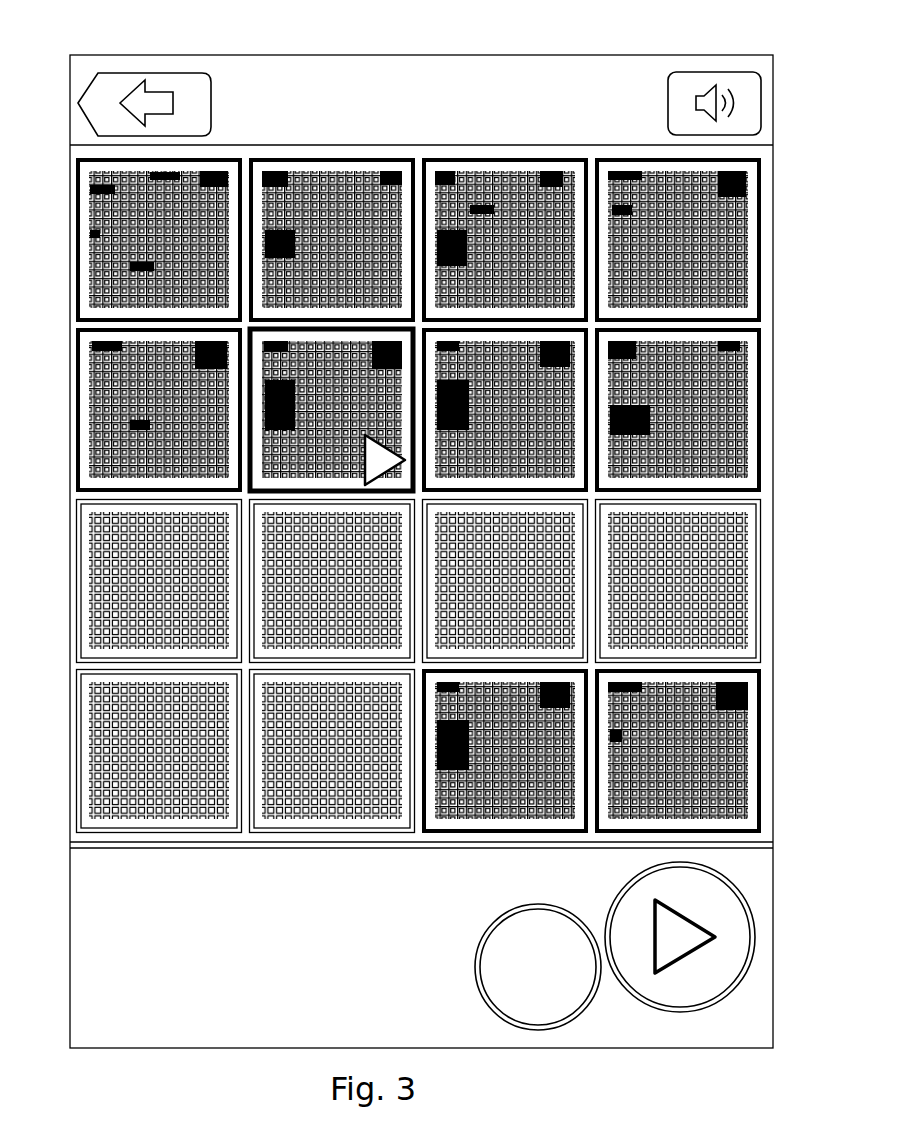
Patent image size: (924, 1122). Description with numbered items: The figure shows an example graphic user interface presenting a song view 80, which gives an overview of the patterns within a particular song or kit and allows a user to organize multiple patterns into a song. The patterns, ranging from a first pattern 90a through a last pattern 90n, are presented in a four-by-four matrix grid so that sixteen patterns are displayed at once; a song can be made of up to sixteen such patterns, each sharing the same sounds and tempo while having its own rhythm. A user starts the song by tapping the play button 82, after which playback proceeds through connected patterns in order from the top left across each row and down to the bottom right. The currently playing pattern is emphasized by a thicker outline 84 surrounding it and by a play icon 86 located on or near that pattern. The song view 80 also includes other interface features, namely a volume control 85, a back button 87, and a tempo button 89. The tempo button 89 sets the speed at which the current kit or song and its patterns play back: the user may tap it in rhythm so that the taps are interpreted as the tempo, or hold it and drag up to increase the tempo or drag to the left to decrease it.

The song view 80 is at (425, 38).
The play button 82 is at (680, 1010).
The thicker outline 84 is at (272, 492).
The volume control 85 is at (703, 72).
The play icon 86 is at (368, 487).
The back button 87 is at (151, 72).
The tempo button 89 is at (575, 1015).
The pattern 90a is at (75, 252).
The pattern 90n is at (762, 790).